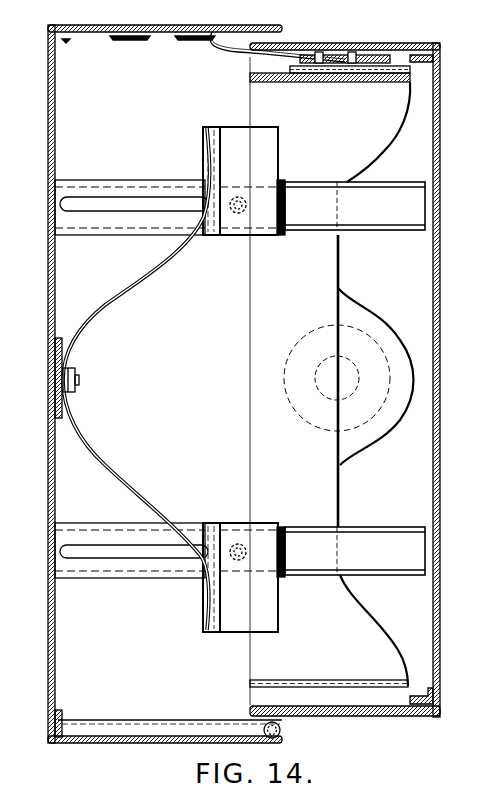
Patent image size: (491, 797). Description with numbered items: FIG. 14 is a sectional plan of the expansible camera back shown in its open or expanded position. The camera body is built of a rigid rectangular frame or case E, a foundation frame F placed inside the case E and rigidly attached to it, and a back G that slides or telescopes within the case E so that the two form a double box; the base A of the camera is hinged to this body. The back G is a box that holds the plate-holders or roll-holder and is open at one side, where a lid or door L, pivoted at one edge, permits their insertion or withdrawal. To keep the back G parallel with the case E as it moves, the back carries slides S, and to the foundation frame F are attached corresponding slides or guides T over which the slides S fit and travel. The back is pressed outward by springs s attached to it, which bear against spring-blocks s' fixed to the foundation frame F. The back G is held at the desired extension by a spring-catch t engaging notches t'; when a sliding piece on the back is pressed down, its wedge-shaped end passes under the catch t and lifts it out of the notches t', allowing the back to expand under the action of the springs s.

The back G is at (153, 384).
The lid or door L is at (168, 742).
The base A is at (447, 380).
The rigid frame or case E is at (354, 386).
The spring-catch t is at (310, 58).
The notches t' is at (171, 375).
The slides S is at (131, 383).
The spring-blocks s' is at (244, 379).
The slides or guides T is at (355, 378).
The foundation frame F is at (332, 384).
The springs s is at (136, 379).